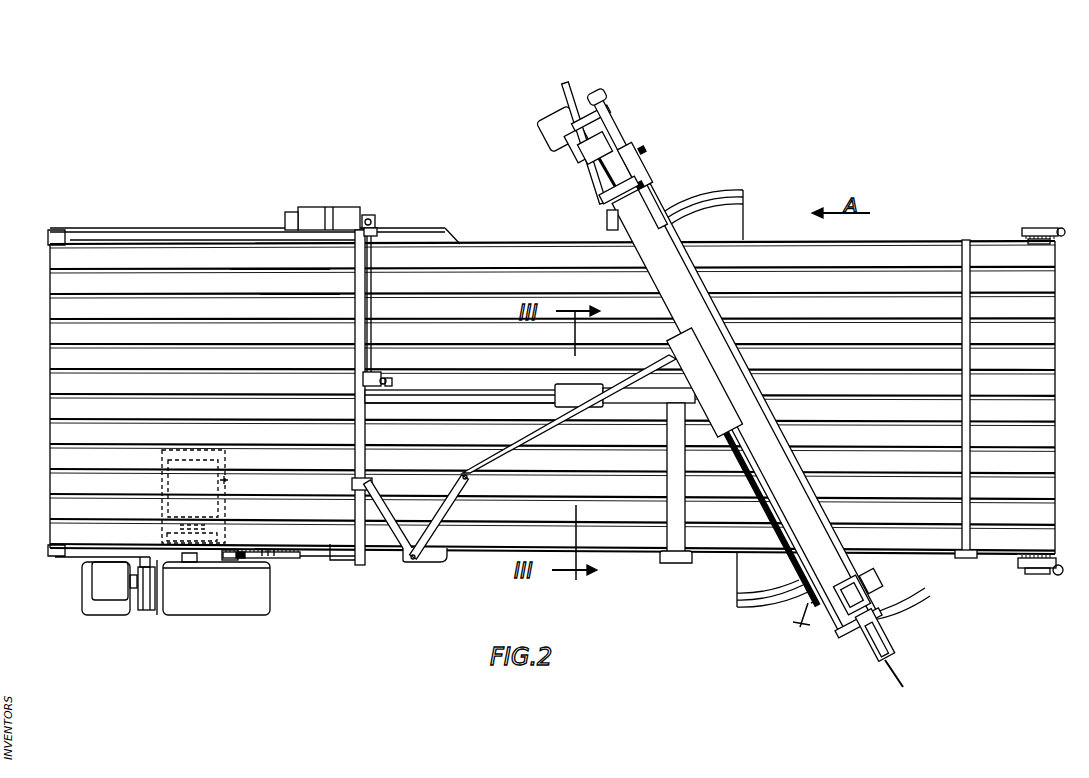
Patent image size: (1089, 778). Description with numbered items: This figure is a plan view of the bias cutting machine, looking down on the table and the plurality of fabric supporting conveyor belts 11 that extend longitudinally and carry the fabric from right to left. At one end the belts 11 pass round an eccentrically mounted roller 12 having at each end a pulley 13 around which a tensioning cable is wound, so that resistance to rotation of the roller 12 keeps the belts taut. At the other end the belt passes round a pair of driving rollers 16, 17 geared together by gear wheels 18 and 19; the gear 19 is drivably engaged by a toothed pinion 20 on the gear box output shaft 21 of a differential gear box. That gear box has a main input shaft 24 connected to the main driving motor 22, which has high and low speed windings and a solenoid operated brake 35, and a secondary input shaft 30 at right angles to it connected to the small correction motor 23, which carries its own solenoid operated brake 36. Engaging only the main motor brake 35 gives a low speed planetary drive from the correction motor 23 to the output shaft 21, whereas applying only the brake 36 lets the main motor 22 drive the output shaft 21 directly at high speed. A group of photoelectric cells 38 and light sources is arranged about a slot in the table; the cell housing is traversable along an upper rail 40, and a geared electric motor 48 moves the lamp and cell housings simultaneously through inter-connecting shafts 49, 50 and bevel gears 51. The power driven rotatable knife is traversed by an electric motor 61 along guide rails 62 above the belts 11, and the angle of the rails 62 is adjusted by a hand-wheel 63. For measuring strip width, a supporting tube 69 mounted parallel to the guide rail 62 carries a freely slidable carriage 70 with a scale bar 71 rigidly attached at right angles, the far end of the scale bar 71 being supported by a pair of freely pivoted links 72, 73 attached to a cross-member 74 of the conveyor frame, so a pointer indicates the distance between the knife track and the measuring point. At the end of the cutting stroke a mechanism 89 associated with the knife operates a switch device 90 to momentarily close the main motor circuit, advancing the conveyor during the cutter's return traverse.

The fabric supporting conveyor belts 11 is at (112, 255).
The eccentrically mounted roller 12 is at (1048, 244).
The pulley 13 is at (1036, 229).
The driving roller 16 is at (280, 295).
The driving roller 17 is at (245, 270).
The gear wheel 18 is at (296, 558).
The gear wheel 19 is at (272, 560).
The toothed pinion 20 is at (238, 562).
The gear box output shaft 21 is at (229, 560).
The main driving motor 22 is at (226, 480).
The correction motor 23 is at (103, 592).
The main input shaft 24 is at (218, 524).
The secondary input shaft 30 is at (163, 588).
The solenoid operated brake 35 is at (218, 537).
The solenoid operated brake 36 is at (144, 594).
The photoelectric cells 38 is at (604, 407).
The upper rail 40 is at (500, 390).
The geared electric motor 48 is at (331, 212).
The inter-connecting shaft 49 is at (373, 309).
The inter-connecting shaft 50 is at (438, 388).
The bevel gears 51 is at (382, 376).
The electric motor 61 is at (551, 132).
The guide rails 62 is at (692, 296).
The hand-wheel 63 is at (798, 606).
The supporting tube 69 is at (606, 226).
The carriage 70 is at (708, 381).
The scale bar 71 is at (584, 413).
The pivoted link 72 is at (452, 553).
The pivoted link 73 is at (400, 548).
The cross-member 74 is at (366, 433).
The mechanism 89 is at (873, 623).
The switch device 90 is at (631, 192).